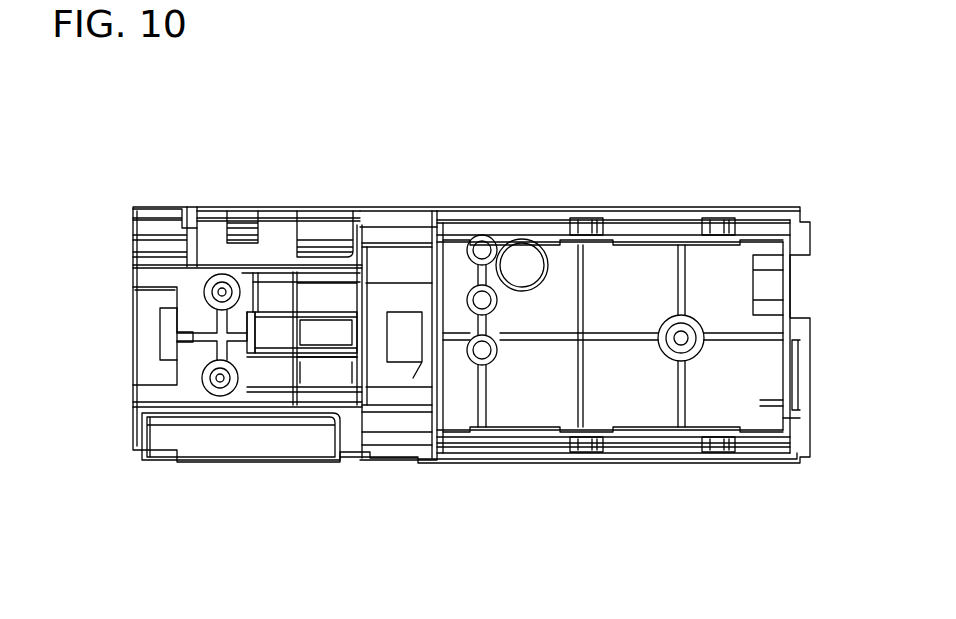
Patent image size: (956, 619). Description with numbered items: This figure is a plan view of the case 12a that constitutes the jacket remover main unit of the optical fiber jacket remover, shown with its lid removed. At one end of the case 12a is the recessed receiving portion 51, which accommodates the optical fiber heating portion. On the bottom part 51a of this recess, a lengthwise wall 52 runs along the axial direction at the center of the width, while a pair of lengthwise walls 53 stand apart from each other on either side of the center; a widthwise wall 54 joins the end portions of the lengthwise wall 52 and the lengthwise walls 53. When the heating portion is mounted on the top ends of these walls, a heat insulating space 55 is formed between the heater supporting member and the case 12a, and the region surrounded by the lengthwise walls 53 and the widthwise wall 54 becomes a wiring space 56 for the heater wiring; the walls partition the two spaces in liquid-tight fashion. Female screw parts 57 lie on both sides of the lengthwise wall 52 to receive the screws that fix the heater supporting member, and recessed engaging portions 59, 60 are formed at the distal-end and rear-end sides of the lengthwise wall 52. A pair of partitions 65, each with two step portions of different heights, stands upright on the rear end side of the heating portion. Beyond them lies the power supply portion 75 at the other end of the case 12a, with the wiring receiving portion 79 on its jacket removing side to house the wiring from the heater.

The case 12a is at (410, 463).
The recessed receiving portion 51 is at (307, 315).
The bottom part 51a is at (308, 355).
The lengthwise wall 52 is at (193, 340).
The lengthwise walls 53 is at (310, 300).
The widthwise wall 54 is at (270, 292).
The heat insulating space 55 is at (245, 372).
The wiring space 56 is at (338, 392).
The female screw parts 57 is at (207, 288).
The recessed engaging portion 59 is at (167, 330).
The recessed engaging portion 60 is at (272, 377).
The partitions 65 is at (378, 295).
The power supply portion 75 is at (634, 204).
The wiring receiving portion 79 is at (408, 268).